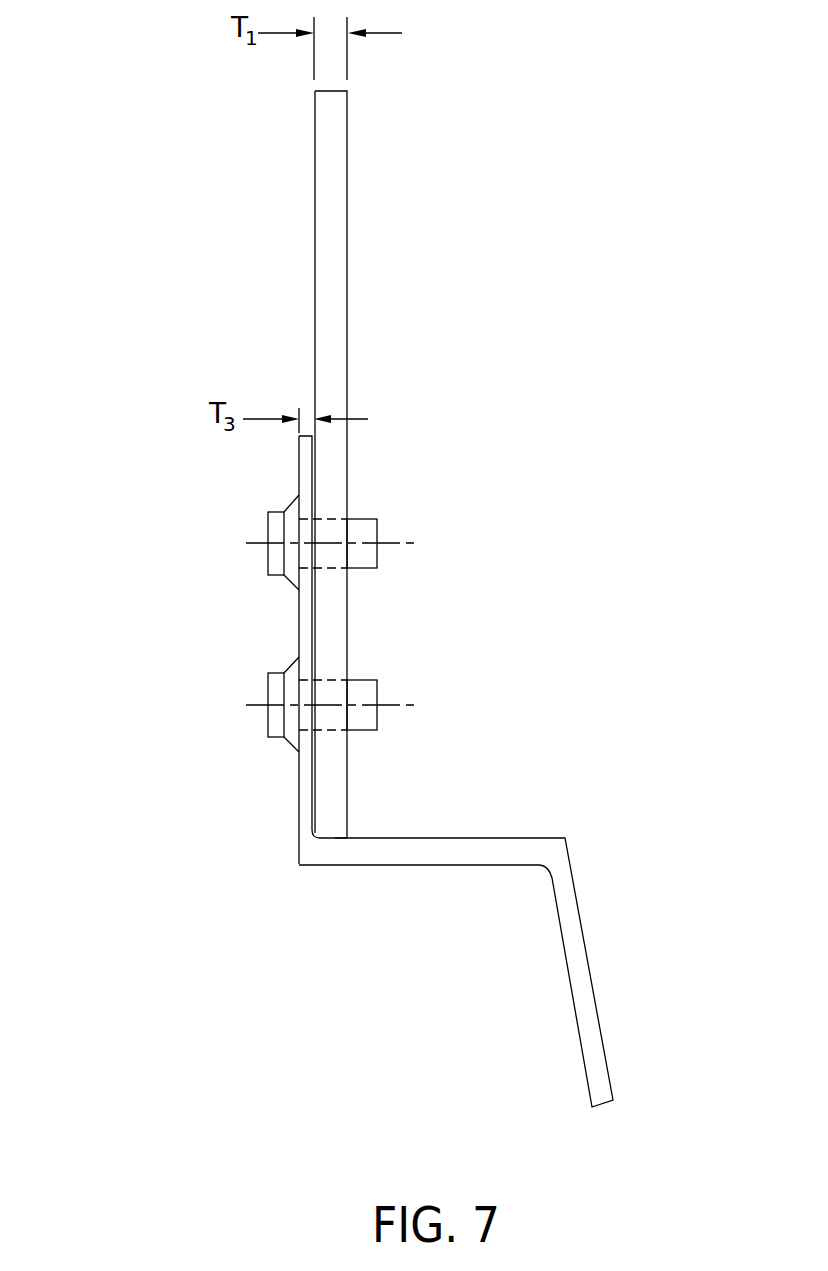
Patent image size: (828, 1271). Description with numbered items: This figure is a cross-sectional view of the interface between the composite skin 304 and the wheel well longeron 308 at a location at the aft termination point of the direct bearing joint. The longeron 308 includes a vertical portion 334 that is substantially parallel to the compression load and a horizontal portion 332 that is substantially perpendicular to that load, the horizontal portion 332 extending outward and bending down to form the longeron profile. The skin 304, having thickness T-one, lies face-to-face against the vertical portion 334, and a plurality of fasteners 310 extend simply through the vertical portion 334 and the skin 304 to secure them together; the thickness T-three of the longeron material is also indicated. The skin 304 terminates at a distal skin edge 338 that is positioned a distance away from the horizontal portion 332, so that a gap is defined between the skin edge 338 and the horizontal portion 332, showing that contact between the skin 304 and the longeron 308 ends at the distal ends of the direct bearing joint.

The composite skin 304 is at (330, 272).
The wheel well longeron 308 is at (391, 771).
The fasteners 310 is at (269, 705).
The horizontal portion 332 is at (423, 852).
The vertical portion 334 is at (299, 793).
The distal skin edge 338 is at (334, 840).